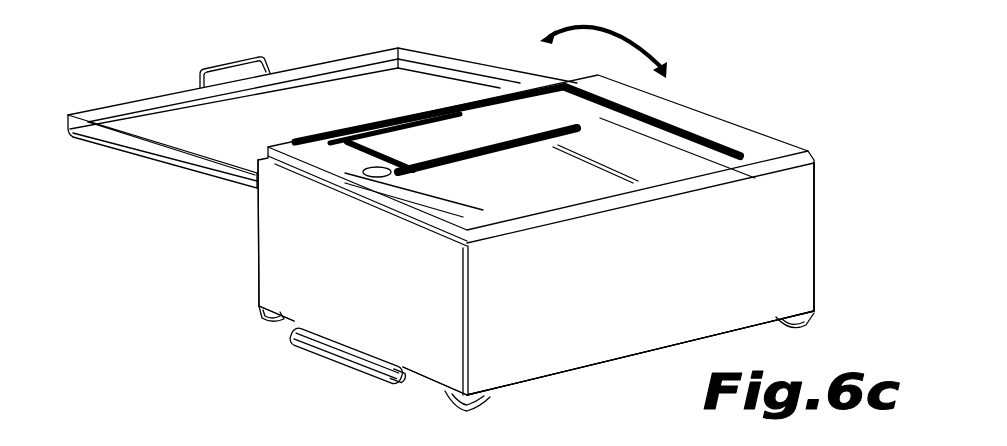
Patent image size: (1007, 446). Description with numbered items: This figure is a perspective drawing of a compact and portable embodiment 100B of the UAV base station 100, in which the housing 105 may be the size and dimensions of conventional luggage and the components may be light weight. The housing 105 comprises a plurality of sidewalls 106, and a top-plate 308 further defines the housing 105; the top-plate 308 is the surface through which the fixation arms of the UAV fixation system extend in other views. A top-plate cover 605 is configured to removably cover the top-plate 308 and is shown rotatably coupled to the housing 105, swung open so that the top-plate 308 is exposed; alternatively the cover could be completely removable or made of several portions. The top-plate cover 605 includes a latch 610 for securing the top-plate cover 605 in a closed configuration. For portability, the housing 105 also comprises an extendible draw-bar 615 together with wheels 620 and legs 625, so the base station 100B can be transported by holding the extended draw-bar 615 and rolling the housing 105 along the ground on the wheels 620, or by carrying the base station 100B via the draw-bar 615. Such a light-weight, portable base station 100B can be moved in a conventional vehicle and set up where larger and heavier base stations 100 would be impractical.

The UAV base station 100 is at (786, 89).
The compact and portable UAV base station embodiment 100B is at (821, 124).
The housing 105 is at (256, 264).
The sidewalls 106 is at (818, 230).
The top-plate 308 is at (698, 110).
The top-plate cover 605 is at (154, 164).
The latch 610 is at (200, 72).
The extendible draw-bar 615 is at (334, 363).
The wheels 620 is at (818, 322).
The legs 625 is at (262, 313).